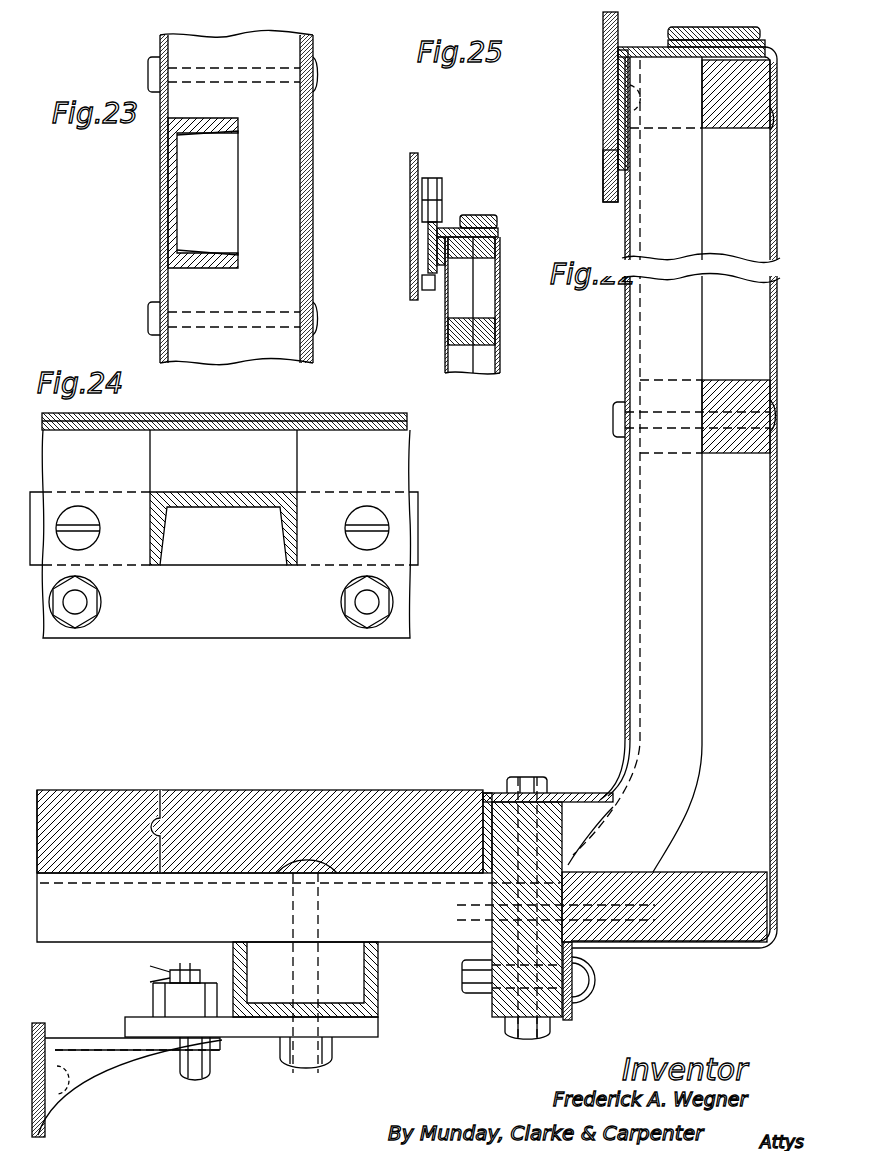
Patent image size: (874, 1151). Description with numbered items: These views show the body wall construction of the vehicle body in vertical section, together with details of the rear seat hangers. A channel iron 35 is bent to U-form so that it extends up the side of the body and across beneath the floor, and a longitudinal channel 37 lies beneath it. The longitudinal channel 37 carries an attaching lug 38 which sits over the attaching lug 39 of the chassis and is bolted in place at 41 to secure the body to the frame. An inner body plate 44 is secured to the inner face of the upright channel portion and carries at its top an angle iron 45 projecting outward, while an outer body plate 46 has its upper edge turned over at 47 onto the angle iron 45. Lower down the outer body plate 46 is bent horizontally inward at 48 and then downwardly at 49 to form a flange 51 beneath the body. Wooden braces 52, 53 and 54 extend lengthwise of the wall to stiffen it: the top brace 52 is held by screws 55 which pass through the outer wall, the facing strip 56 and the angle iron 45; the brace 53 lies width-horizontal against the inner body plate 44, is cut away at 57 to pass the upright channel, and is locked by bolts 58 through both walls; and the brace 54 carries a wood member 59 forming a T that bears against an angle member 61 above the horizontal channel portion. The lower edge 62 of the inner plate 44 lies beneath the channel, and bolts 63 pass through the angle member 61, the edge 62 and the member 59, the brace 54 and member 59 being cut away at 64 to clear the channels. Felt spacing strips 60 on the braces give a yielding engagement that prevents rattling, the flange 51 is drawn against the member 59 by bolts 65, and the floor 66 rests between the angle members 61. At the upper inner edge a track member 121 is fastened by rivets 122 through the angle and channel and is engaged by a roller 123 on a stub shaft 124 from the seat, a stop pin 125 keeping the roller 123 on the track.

In FIG. 24, the channel iron 35 is at (246, 483).
In FIG. 22, the longitudinal channel 37 is at (379, 976).
In FIG. 22, the attaching lug 38 is at (258, 1038).
In FIG. 22, the attaching lug of the chassis 39 is at (114, 1070).
In FIG. 22, the bolt 41 is at (186, 1006).
In FIG. 22, the body plate 44 is at (625, 516).
In FIG. 22, the angle iron 45 is at (632, 50).
In FIG. 22, the outer body plate 46 is at (771, 482).
In FIG. 22, the turned-over upper edge 47 is at (771, 50).
In FIG. 22, the horizontal bend 48 is at (763, 947).
In FIG. 22, the downward bend 49 is at (580, 955).
In FIG. 22, the flange 51 is at (574, 1013).
In FIG. 22, the top brace 52 is at (756, 100).
In FIG. 22, the brace 53 is at (762, 384).
In FIG. 22, the brace 54 is at (710, 880).
In FIG. 22, the screw 55 is at (752, 40).
In FIG. 22, the facing strip 56 is at (684, 30).
In FIG. 23, the cut-away 57 is at (226, 172).
In FIG. 22, the bolt 58 is at (620, 420).
In FIG. 22, the member 59 is at (505, 962).
In FIG. 22, the felt spacing strip 60 is at (772, 120).
In FIG. 22, the angle member 61 is at (487, 793).
In FIG. 22, the lower edge 62 is at (546, 790).
In FIG. 22, the bolt 63 is at (520, 1035).
In FIG. 24, the cut-away 64 is at (300, 432).
In FIG. 22, the bolt 65 is at (470, 992).
In FIG. 22, the floor 66 is at (282, 790).
In FIG. 22, the track member 121 is at (604, 62).
In FIG. 22, the rivets 122 is at (604, 146).
In FIG. 25, the roller 123 is at (431, 178).
In FIG. 25, the stub shaft 124 is at (418, 200).
In FIG. 25, the stop pin 125 is at (428, 291).